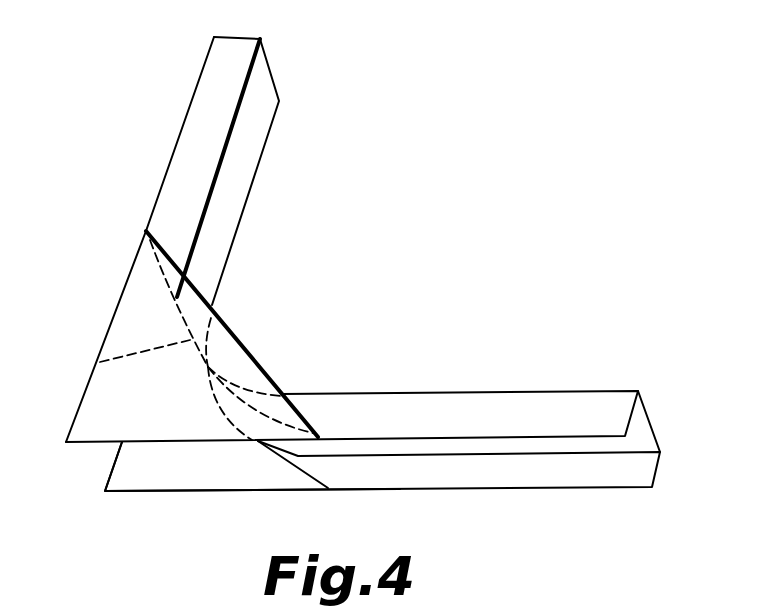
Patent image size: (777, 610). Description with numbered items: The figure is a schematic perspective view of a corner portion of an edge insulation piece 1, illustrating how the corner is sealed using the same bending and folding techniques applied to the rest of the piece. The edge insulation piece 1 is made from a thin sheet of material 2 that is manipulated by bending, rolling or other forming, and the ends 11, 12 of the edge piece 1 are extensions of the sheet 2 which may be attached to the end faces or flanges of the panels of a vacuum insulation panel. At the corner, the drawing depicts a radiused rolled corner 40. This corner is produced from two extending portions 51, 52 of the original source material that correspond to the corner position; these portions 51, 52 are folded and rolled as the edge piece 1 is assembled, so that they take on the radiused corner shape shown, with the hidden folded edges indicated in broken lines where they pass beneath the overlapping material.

The edge insulation piece 1 is at (287, 192).
The thin sheet of material 2 is at (395, 403).
The end of the edge piece 11 is at (617, 417).
The end of the edge piece 12 is at (643, 475).
The radiused rolled corner 40 is at (100, 362).
The extending portion 51 is at (137, 283).
The extending portion 52 is at (193, 473).